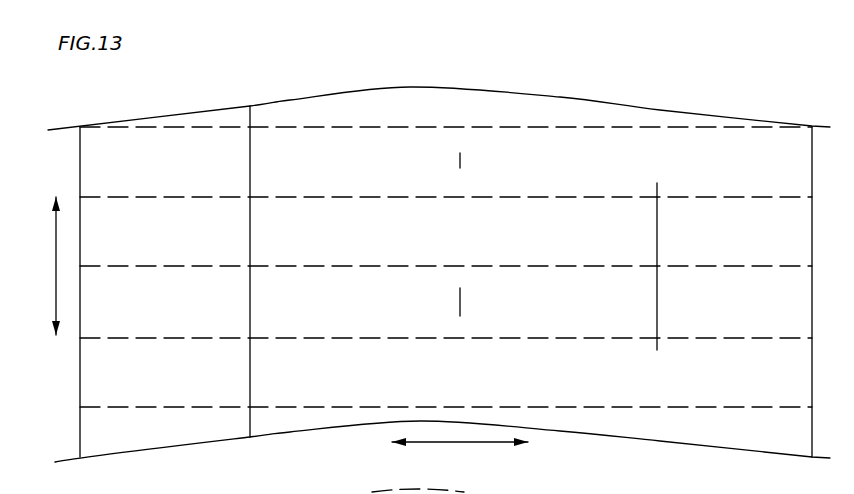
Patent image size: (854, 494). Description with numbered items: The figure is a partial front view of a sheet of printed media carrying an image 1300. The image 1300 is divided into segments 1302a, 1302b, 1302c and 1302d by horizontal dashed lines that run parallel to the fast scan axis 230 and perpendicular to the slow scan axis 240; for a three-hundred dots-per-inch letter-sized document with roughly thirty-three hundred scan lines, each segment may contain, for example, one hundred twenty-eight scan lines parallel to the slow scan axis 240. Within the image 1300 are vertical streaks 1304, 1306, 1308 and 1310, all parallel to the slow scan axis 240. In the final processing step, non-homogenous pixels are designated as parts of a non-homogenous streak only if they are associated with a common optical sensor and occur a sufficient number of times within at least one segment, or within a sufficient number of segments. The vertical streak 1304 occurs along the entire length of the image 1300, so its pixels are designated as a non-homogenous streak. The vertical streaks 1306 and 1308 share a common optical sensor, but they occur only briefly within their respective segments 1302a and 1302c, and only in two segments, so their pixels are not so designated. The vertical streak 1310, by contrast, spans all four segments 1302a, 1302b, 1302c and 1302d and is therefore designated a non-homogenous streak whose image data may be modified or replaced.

The image 1300 is at (642, 65).
The segment 1302a is at (131, 157).
The segment 1302b is at (187, 226).
The segment 1302c is at (131, 315).
The segment 1302d is at (172, 380).
The vertical streak 1304 is at (253, 150).
The vertical streak 1306 is at (463, 160).
The vertical streak 1308 is at (463, 308).
The vertical streak 1310 is at (658, 235).
The slow scan axis 240 is at (56, 272).
The fast scan axis 230 is at (460, 443).